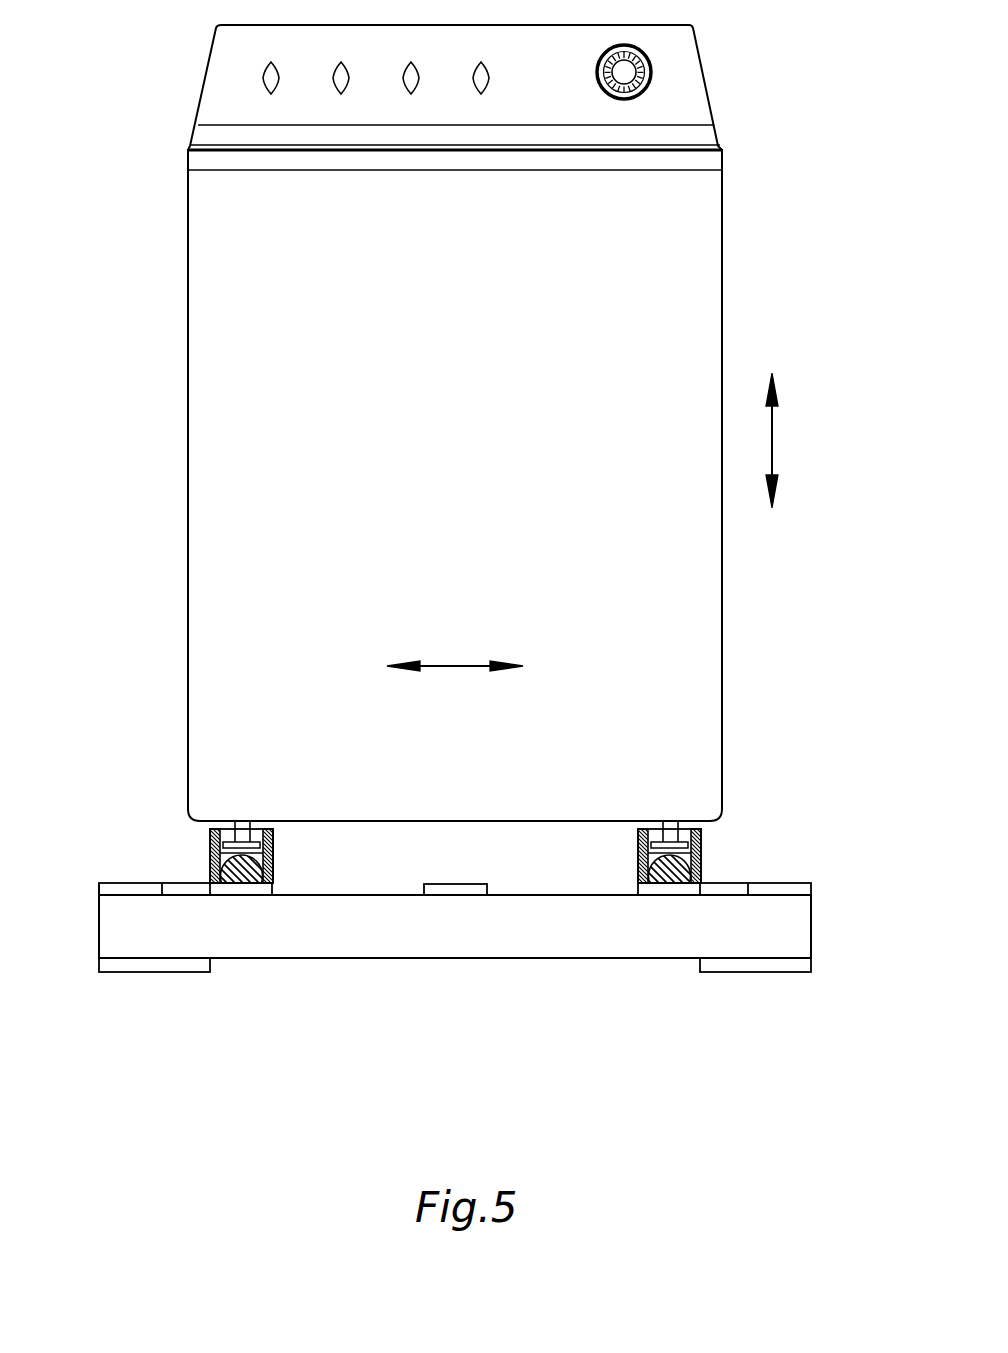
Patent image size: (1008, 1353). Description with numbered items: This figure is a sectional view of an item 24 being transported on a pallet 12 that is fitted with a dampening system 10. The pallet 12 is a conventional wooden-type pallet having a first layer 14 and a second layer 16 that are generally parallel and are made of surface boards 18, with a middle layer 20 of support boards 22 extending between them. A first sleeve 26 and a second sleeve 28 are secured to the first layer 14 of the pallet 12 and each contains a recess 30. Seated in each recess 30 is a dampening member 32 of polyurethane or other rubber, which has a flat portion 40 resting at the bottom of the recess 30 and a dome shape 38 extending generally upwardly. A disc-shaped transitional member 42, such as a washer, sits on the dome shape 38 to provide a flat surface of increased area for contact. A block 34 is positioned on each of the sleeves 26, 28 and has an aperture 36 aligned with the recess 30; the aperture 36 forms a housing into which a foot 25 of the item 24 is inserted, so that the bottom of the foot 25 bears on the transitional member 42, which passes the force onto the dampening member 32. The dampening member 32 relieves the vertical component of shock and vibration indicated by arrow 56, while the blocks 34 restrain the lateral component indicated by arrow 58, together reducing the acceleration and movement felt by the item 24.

The dampening system 10 is at (385, 439).
The pallet 12 is at (460, 924).
The first layer 14 is at (113, 883).
The second layer 16 is at (124, 972).
The surface boards 18 is at (99, 888).
The middle layer 20 is at (828, 911).
The support boards 22 is at (446, 938).
The item 24 is at (208, 310).
The foot 25 is at (247, 830).
The first sleeve 26 is at (672, 843).
The second sleeve 28 is at (241, 858).
The recess 30 is at (643, 857).
The dampening member 32 is at (683, 860).
The block 34 is at (638, 843).
The aperture 36 is at (657, 829).
The dome shape 38 is at (226, 862).
The flat portion 40 is at (243, 870).
The transitional member 42 is at (263, 846).
The arrow (vertical direction) 56 is at (773, 439).
The arrow (lateral direction) 58 is at (455, 664).